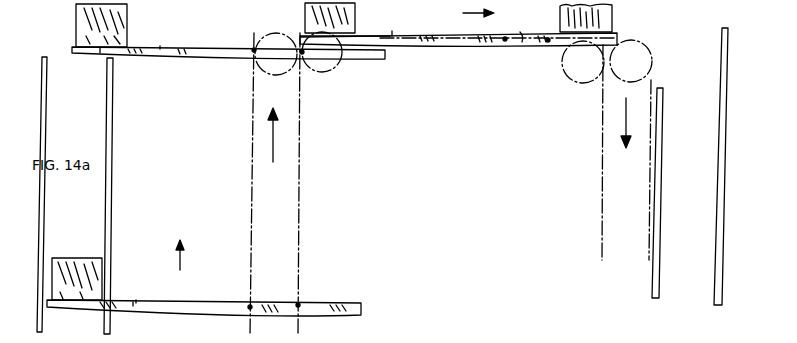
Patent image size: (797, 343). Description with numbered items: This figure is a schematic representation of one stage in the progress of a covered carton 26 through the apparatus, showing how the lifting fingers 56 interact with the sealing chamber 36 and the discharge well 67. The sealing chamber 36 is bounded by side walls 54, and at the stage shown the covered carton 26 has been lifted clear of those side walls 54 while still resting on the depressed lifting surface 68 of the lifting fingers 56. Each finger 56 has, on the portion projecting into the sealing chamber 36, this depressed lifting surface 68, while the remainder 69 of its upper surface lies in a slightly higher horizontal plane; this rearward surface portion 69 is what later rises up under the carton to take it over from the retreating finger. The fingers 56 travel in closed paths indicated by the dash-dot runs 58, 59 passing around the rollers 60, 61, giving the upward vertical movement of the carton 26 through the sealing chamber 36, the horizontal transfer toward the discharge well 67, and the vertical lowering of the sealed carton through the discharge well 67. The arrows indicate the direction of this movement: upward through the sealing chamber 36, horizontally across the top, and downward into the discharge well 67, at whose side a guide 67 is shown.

The sealing chamber 36 is at (66, 78).
The side walls 54 is at (114, 106).
The stack of sheets 26 is at (114, 30).
The lifting fingers 56 is at (213, 57).
The depressed lifting surface 68 is at (163, 48).
The rearward surface portion 69 is at (524, 38).
The roller 60 is at (262, 72).
The roller 61 is at (330, 72).
The belt run 58 is at (250, 222).
The belt run 59 is at (300, 238).
The discharge well 67 is at (700, 163).